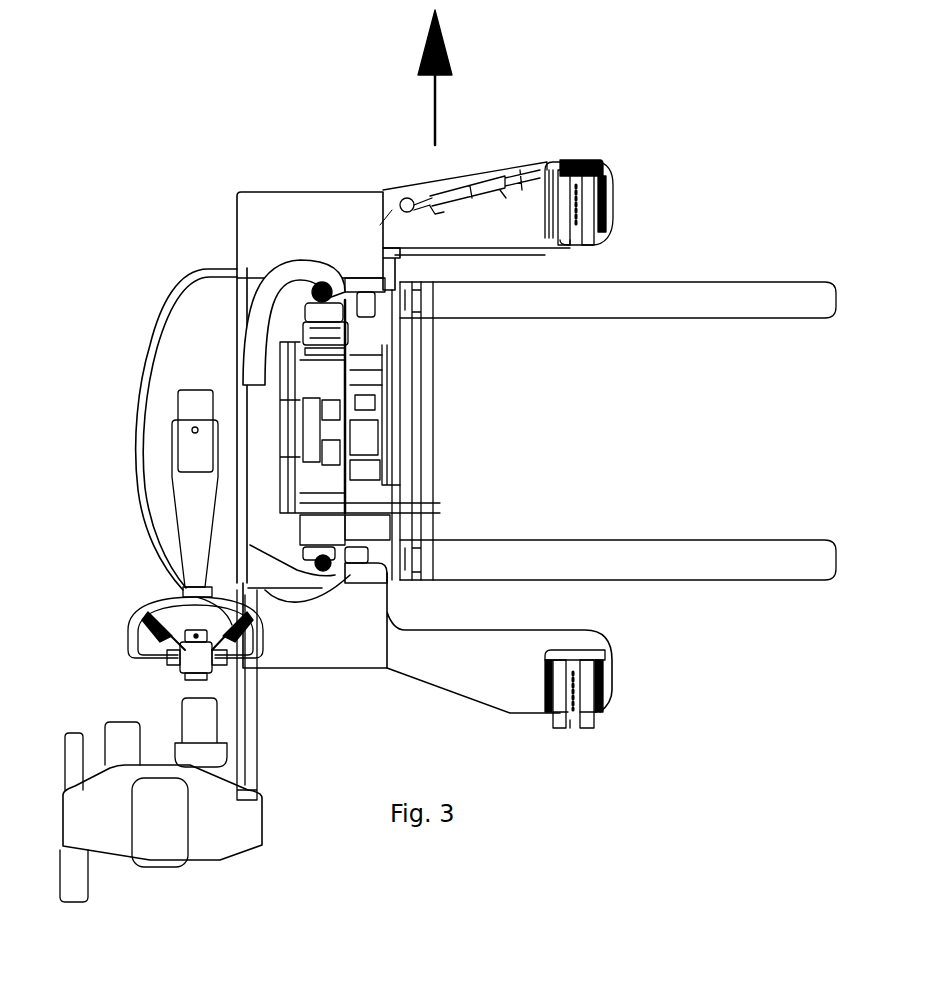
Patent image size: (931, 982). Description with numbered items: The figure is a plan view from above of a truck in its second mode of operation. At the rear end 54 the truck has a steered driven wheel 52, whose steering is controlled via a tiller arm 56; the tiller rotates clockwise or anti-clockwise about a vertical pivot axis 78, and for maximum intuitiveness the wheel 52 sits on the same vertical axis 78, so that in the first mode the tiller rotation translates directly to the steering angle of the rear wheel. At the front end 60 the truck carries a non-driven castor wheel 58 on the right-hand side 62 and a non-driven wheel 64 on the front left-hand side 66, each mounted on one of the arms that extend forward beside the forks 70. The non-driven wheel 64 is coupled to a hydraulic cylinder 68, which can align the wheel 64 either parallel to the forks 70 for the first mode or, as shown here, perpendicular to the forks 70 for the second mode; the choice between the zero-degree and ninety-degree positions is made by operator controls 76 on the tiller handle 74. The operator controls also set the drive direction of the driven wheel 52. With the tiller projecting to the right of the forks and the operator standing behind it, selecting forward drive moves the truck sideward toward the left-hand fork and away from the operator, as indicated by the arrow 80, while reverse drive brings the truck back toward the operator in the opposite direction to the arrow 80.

The steered driven wheel 52 is at (195, 395).
The rear end 54 is at (110, 502).
The tiller arm 56 is at (188, 525).
The non-driven castor wheel 58 is at (585, 728).
The front end 60 is at (666, 218).
The right-hand side 62 is at (462, 700).
The non-driven wheel 64 is at (568, 238).
The front left-hand side 66 is at (425, 180).
The hydraulic cylinder 68 is at (520, 180).
The forks 70 is at (748, 312).
The tiller handle 74 is at (130, 648).
The operator controls 76 is at (178, 605).
The vertical pivot axis 78 is at (192, 430).
The arrow 80 is at (445, 77).